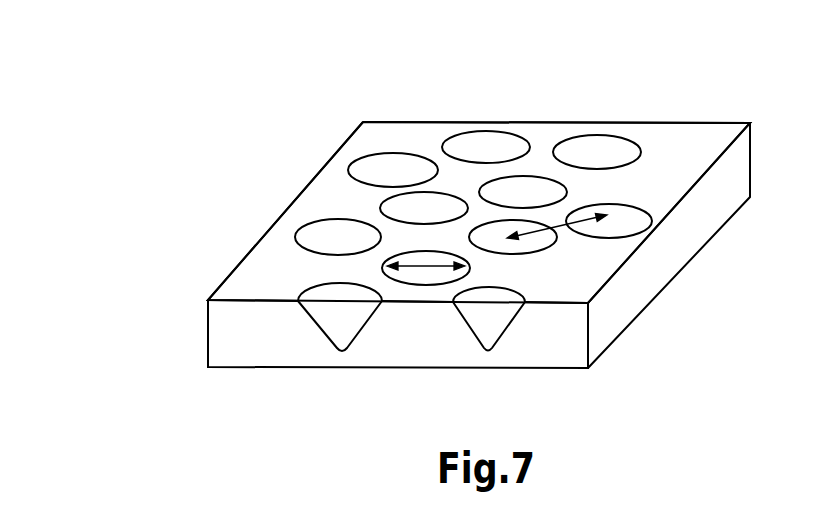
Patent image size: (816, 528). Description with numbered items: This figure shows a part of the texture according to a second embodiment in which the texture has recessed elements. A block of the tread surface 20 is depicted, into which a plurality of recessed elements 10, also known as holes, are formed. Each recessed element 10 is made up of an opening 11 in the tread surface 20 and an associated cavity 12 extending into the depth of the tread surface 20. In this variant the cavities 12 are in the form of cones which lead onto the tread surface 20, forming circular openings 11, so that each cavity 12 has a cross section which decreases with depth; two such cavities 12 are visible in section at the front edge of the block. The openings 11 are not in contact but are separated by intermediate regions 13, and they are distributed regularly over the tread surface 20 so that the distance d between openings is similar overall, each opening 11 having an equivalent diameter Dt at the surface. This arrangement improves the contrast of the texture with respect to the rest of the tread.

The recessed elements 10 is at (145, 40).
The openings 11 is at (323, 222).
The cavities 12 is at (337, 308).
The intermediate regions 13 is at (465, 182).
The tread surface 20 is at (703, 164).